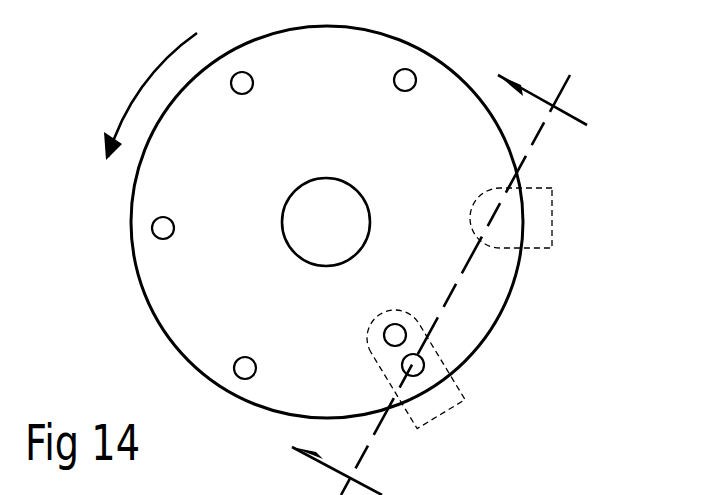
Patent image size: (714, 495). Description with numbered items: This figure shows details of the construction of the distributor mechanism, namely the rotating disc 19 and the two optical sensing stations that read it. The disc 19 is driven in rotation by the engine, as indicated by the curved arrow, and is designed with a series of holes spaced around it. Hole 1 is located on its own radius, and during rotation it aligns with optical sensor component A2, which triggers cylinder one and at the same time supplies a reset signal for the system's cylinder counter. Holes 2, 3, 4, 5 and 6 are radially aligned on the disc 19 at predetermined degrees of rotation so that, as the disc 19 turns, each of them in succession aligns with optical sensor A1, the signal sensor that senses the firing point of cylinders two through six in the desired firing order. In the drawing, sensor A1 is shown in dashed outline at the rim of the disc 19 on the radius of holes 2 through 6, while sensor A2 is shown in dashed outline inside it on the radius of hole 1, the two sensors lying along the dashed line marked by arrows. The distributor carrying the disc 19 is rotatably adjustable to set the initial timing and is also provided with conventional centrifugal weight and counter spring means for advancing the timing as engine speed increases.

The disc 19 is at (158, 266).
The hole 1 is at (392, 324).
The hole 2 is at (403, 360).
The hole 3 is at (257, 366).
The hole 4 is at (175, 226).
The hole 5 is at (254, 82).
The hole 6 is at (417, 82).
The optical sensor A1 is at (552, 223).
The optical sensor component A2 is at (442, 415).